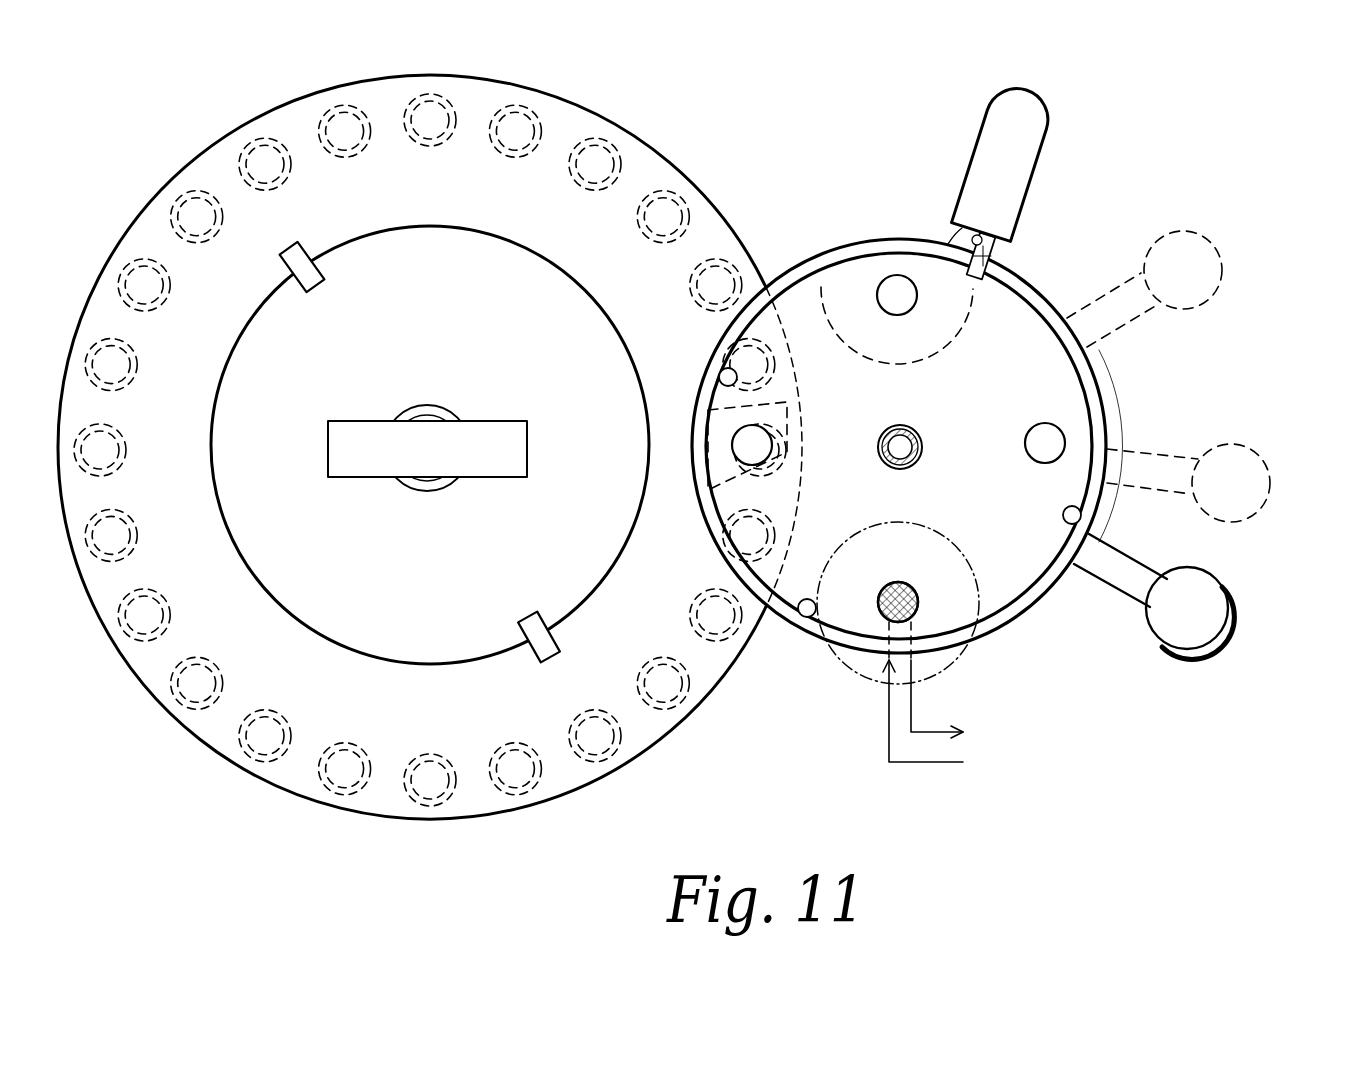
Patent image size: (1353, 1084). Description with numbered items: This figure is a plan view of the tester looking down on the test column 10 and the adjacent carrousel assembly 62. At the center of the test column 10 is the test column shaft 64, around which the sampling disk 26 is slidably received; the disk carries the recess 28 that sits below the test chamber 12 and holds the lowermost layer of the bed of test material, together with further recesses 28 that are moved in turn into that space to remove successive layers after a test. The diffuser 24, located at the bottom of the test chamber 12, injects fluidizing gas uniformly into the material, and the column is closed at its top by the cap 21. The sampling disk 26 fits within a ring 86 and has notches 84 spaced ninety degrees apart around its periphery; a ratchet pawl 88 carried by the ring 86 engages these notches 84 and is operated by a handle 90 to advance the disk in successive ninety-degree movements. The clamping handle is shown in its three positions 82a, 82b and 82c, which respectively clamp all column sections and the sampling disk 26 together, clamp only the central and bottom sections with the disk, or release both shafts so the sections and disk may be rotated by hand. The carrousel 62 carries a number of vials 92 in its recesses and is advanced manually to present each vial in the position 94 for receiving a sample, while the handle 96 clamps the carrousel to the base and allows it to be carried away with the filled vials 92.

The test column 10 is at (1140, 150).
The test chamber 12 is at (920, 603).
The cap 21 is at (967, 654).
The diffuser 24 is at (890, 586).
The sampling disk 26 is at (1003, 318).
The recess 28 is at (888, 292).
The carrousel assembly 62 is at (732, 686).
The test column shaft 64 is at (880, 435).
The clamping handle position 82a is at (1220, 583).
The clamping handle position 82b is at (1250, 449).
The clamping handle position 82c is at (1198, 231).
The notches 84 is at (980, 272).
The ring 86 is at (1102, 401).
The ratchet pawl 88 is at (1012, 257).
The handle 90 is at (975, 135).
The vials 92 is at (340, 796).
The vial position 94 is at (788, 430).
The handle 96 is at (463, 421).